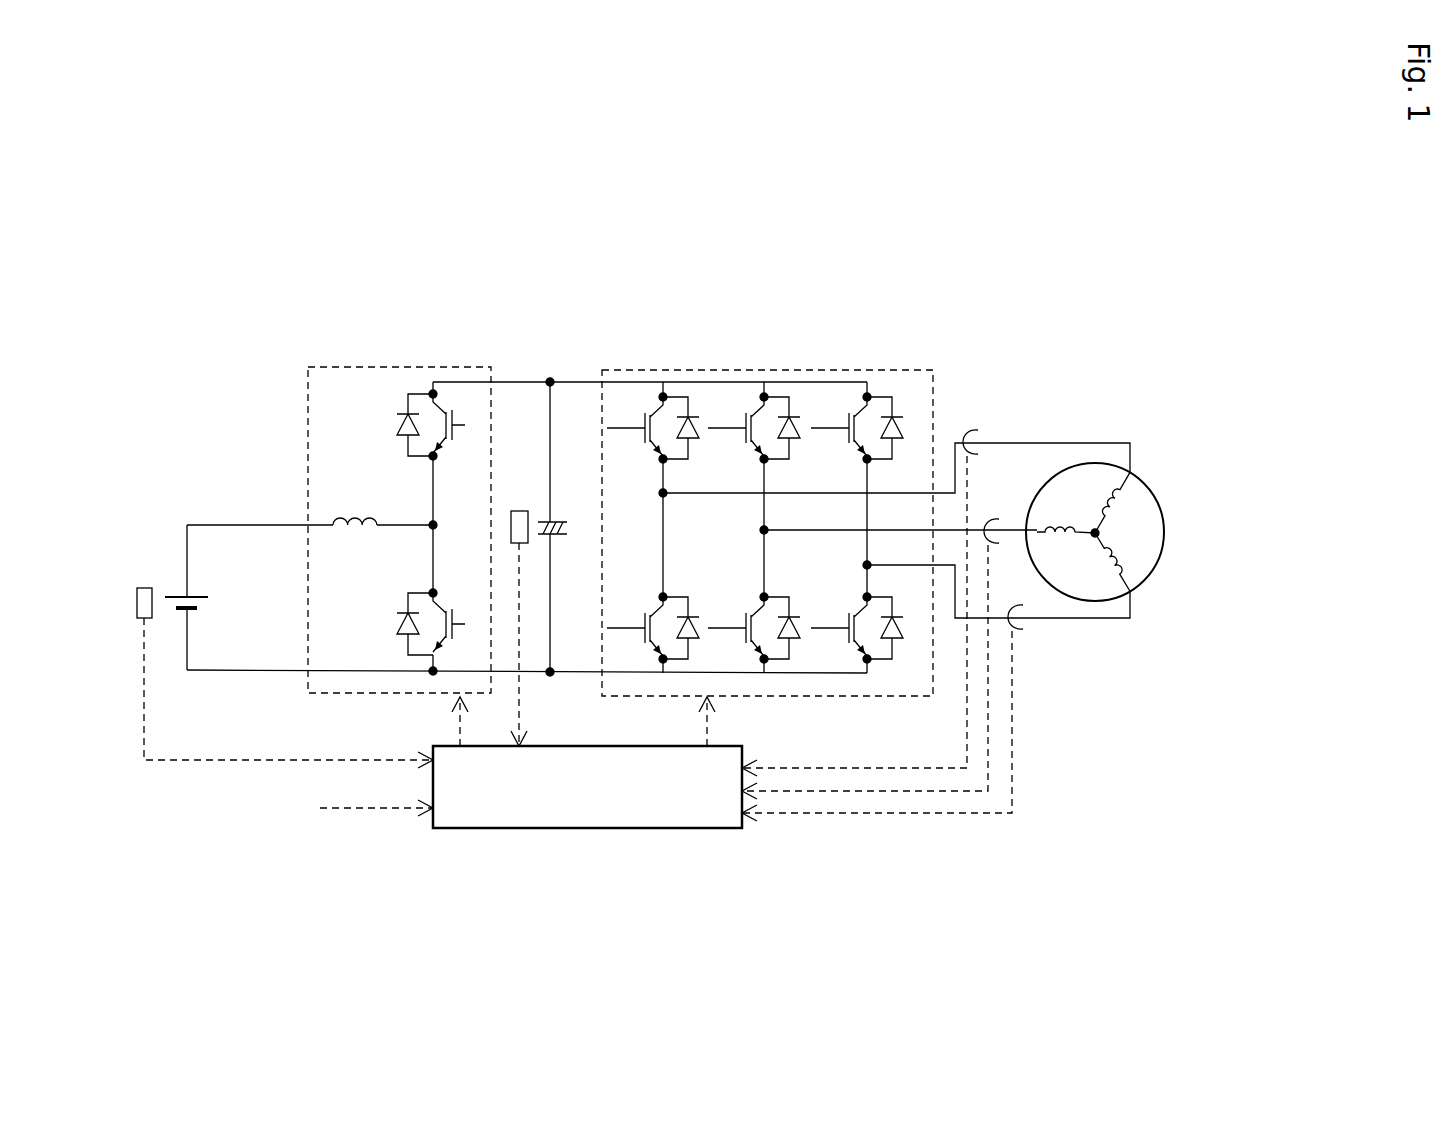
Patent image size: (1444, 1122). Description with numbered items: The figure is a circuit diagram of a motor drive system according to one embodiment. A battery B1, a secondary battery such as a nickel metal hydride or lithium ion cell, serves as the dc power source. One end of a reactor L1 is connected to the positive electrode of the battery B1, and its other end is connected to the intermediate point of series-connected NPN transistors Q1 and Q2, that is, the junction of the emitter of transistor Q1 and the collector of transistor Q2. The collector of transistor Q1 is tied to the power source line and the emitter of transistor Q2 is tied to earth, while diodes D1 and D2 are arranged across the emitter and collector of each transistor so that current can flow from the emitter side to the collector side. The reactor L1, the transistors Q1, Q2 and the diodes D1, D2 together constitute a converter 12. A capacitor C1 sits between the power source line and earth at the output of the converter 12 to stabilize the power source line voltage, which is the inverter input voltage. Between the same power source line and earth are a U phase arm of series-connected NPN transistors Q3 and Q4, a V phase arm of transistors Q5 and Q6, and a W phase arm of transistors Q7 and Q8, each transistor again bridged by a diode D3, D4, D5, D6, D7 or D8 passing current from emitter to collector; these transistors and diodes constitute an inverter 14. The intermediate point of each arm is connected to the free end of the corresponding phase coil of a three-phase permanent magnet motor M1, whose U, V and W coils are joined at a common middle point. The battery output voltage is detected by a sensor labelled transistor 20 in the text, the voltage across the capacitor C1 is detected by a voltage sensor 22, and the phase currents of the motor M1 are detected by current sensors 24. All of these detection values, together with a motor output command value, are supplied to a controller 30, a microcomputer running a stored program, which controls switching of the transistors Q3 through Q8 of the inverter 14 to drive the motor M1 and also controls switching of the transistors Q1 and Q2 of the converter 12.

The converter 12 is at (399, 490).
The inverter 14 is at (866, 492).
The transistor 20 is at (263, 676).
The voltage sensor 22 is at (519, 511).
The current sensors 24 is at (978, 430).
The controller 30 is at (530, 829).
The battery B1 is at (203, 597).
The reactor L1 is at (355, 505).
The capacitor C1 is at (556, 520).
The motor M1 is at (1165, 532).
The NPN transistor Q1 is at (457, 428).
The NPN transistor Q2 is at (457, 620).
The NPN transistor Q3 is at (637, 428).
The NPN transistor Q4 is at (637, 628).
The NPN transistor Q5 is at (738, 428).
The NPN transistor Q6 is at (738, 628).
The NPN transistor Q7 is at (841, 428).
The NPN transistor Q8 is at (841, 628).
The diode D1 is at (395, 425).
The diode D2 is at (395, 624).
The diode D3 is at (699, 434).
The diode D4 is at (699, 626).
The diode D5 is at (800, 434).
The diode D6 is at (800, 626).
The diode D7 is at (899, 434).
The diode D8 is at (899, 624).